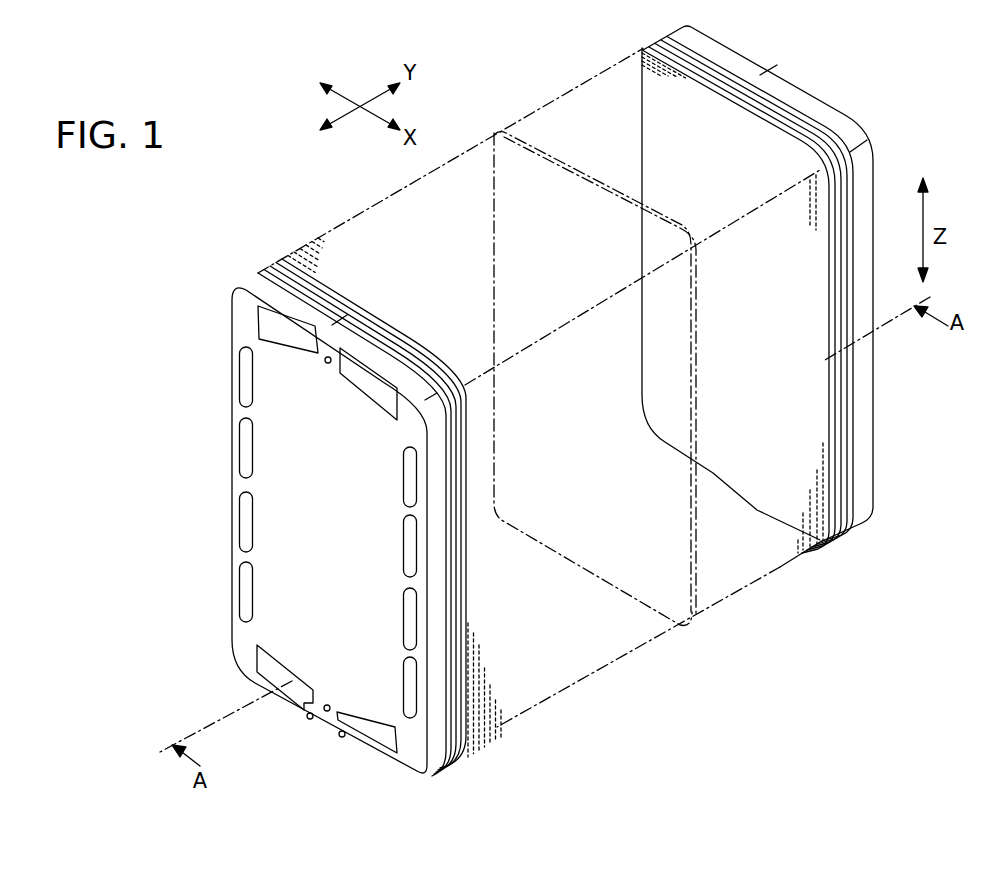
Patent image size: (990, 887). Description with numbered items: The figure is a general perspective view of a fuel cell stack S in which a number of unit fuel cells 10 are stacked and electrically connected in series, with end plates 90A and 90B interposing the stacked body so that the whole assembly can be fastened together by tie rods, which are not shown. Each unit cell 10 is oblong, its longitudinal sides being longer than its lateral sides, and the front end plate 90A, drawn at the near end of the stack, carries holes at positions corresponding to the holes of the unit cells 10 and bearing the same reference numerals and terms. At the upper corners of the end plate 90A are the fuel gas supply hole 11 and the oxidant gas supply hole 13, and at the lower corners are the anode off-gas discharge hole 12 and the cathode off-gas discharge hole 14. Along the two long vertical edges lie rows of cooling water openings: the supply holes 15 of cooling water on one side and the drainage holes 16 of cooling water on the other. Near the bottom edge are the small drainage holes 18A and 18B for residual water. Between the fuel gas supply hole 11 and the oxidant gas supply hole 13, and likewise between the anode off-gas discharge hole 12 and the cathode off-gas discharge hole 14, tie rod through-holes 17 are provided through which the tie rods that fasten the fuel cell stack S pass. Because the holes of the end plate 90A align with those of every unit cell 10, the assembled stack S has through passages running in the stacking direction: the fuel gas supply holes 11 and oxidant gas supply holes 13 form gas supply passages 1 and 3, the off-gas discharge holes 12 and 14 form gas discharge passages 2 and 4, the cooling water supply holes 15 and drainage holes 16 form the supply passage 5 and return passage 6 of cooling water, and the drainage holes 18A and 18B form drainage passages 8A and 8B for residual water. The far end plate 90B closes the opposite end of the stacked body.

The fuel cell stack S is at (902, 119).
The unit fuel cell 10 is at (295, 258).
The end plate 90A is at (257, 283).
The end plate 90B is at (722, 44).
The gas supply passage 1 is at (223, 326).
The fuel gas supply hole 11 is at (268, 326).
The gas discharge passage 2 is at (413, 766).
The anode off-gas discharge hole 12 is at (384, 742).
The gas supply passage 3 is at (415, 367).
The oxidant gas supply hole 13 is at (364, 378).
The gas discharge passage 4 is at (221, 677).
The cathode off-gas discharge hole 14 is at (266, 676).
The supply passage of cooling water 5 is at (178, 484).
The supply hole of cooling water 15 is at (246, 588).
The return passage of cooling water 6 is at (480, 582).
The drainage hole of cooling water 16 is at (410, 680).
The drainage passage of residual water 8A is at (342, 774).
The drainage hole 18A is at (342, 738).
The drainage passage of residual water 8B is at (260, 737).
The drainage hole 18B is at (308, 717).
The tie rod through-hole 17 is at (331, 357).